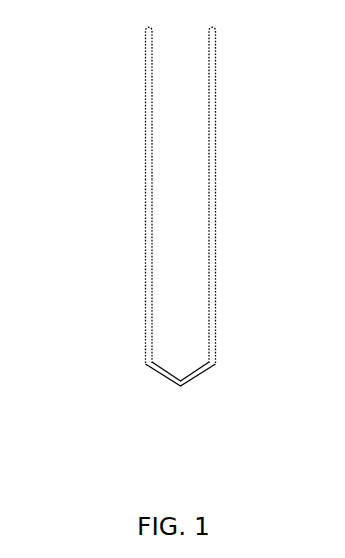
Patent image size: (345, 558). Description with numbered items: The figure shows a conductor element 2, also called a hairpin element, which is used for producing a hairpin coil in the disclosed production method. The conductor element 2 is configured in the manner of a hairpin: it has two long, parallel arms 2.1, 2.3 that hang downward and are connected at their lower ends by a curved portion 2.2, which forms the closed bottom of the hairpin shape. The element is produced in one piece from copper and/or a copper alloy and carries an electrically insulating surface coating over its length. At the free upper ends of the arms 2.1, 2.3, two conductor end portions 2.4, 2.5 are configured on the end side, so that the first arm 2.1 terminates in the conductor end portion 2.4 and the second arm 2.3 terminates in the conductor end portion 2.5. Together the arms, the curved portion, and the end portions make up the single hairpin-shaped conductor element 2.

The conductor element 2 is at (210, 172).
The arm 2.1 is at (133, 248).
The curved portion 2.2 is at (143, 383).
The arm 2.3 is at (228, 248).
The conductor end portion 2.4 is at (135, 97).
The conductor end portion 2.5 is at (227, 85).